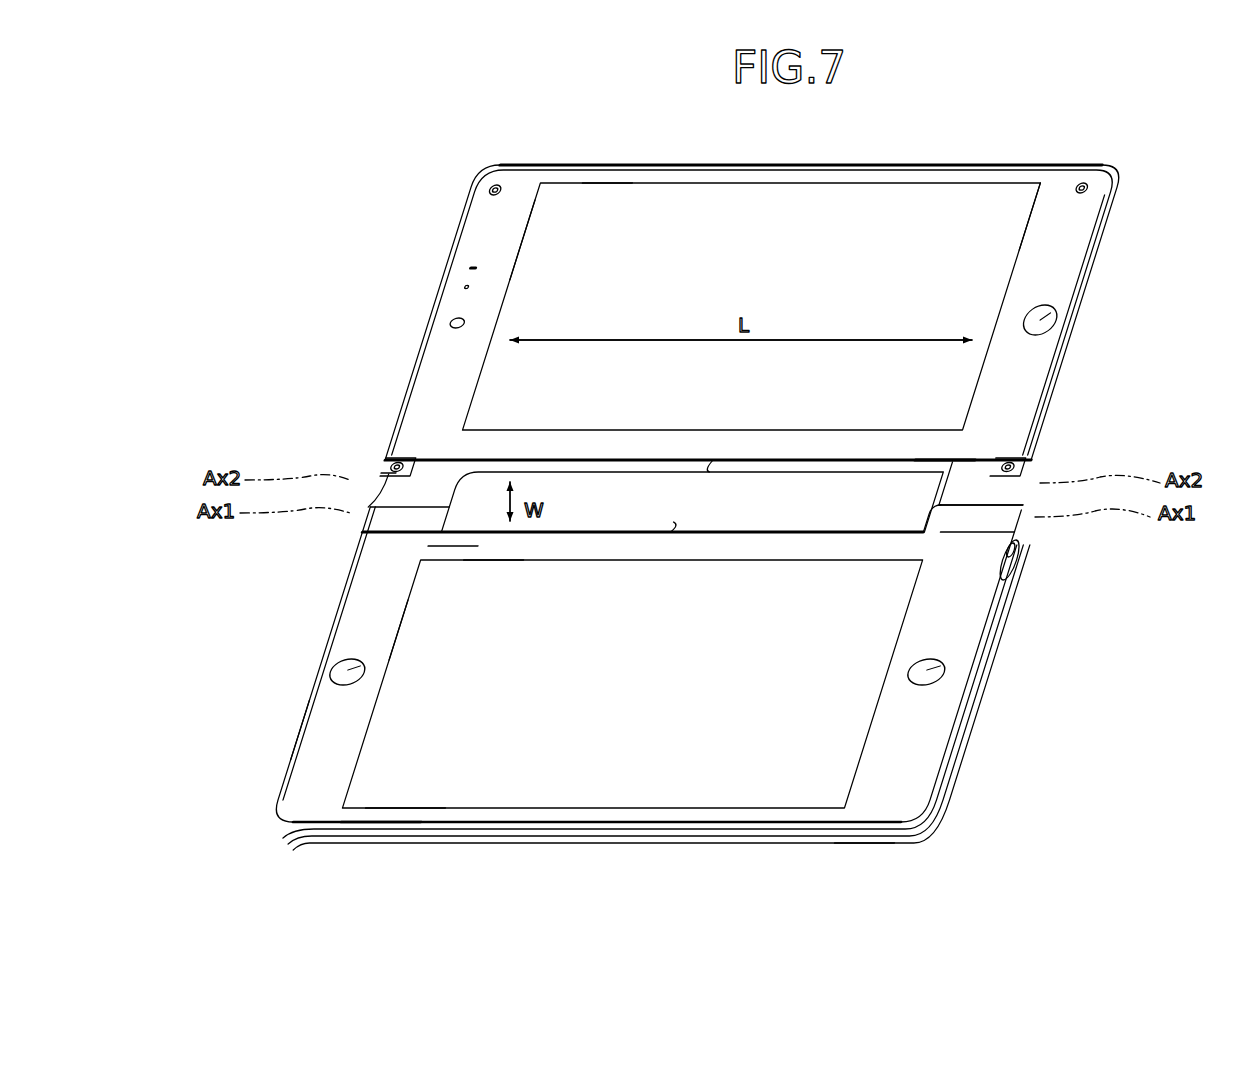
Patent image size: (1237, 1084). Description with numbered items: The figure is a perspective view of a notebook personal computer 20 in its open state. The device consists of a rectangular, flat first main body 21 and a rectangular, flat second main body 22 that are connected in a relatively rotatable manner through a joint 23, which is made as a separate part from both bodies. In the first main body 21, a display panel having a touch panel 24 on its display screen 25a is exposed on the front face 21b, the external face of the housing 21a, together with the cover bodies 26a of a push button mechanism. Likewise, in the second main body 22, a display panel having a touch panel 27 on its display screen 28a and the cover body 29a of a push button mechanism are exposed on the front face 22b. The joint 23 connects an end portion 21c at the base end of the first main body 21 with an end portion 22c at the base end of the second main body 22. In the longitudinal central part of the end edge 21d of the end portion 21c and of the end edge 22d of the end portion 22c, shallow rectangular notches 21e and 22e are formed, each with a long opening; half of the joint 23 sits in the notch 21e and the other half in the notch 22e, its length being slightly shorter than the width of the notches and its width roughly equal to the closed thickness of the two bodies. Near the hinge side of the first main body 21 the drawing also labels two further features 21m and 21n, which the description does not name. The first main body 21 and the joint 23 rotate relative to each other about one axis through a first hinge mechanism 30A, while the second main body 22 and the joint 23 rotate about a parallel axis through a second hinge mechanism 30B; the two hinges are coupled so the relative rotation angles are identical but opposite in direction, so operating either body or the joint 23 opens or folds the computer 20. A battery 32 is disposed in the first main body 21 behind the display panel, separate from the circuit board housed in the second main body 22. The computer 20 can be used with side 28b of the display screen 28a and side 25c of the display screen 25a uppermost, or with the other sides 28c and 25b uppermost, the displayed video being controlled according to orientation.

The notebook personal computer 20 is at (395, 144).
The first main body 21 is at (736, 826).
The housing 21a is at (325, 828).
The front face 21b is at (320, 752).
The end portion 21c is at (455, 548).
The end edge 21d is at (384, 471).
The rectangular notch 21e is at (834, 530).
The hinge protrusion 21m is at (1005, 568).
The hinge protrusion opening 21n is at (1012, 545).
The second main body 22 is at (941, 165).
The front face 22b is at (460, 291).
The end portion 22c is at (930, 440).
The end edge 22d is at (1000, 523).
The rectangular notch 22e is at (852, 460).
The joint 23 is at (603, 470).
The touch panel 24 is at (590, 806).
The display screen 25a is at (466, 790).
The side of display screen 25b is at (400, 626).
The side of display screen 25c is at (660, 560).
The cover bodies 26a is at (350, 668).
The touch panel 27 is at (785, 182).
The display screen 28a is at (656, 202).
The side of display screen 28b is at (1000, 183).
The side of display screen 28c is at (515, 246).
The cover body 29a is at (1042, 322).
The first hinge mechanism 30A is at (941, 518).
The second hinge mechanism 30B is at (951, 488).
The battery 32 is at (866, 844).